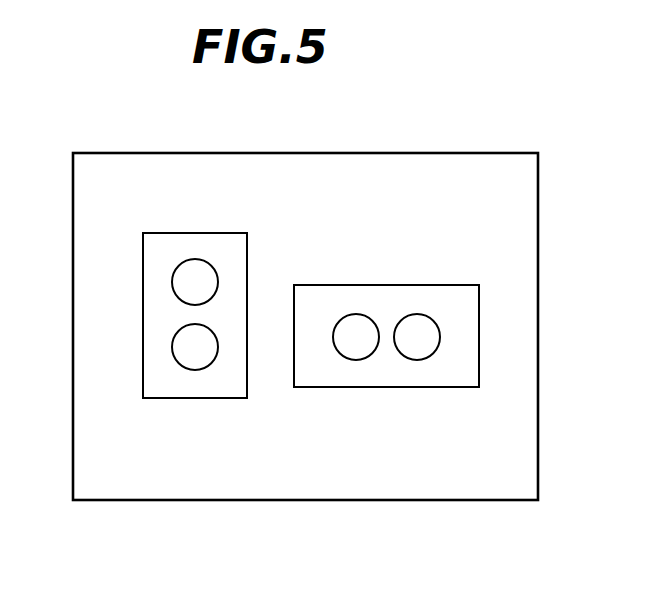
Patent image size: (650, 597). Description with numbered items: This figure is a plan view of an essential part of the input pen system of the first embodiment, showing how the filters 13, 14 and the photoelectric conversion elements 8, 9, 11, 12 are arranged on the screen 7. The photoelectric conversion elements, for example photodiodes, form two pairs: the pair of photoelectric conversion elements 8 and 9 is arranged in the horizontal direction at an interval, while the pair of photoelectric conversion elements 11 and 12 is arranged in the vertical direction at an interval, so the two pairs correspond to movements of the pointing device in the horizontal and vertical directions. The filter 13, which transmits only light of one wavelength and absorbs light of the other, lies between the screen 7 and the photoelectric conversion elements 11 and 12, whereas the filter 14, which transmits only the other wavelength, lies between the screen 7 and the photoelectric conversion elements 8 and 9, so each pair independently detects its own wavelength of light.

The screen 7 is at (305, 152).
The filter 13 is at (196, 232).
The photoelectric conversion element 11 is at (172, 283).
The photoelectric conversion element 12 is at (172, 347).
The filter 14 is at (413, 388).
The photoelectric conversion element 8 is at (357, 314).
The photoelectric conversion element 9 is at (420, 314).